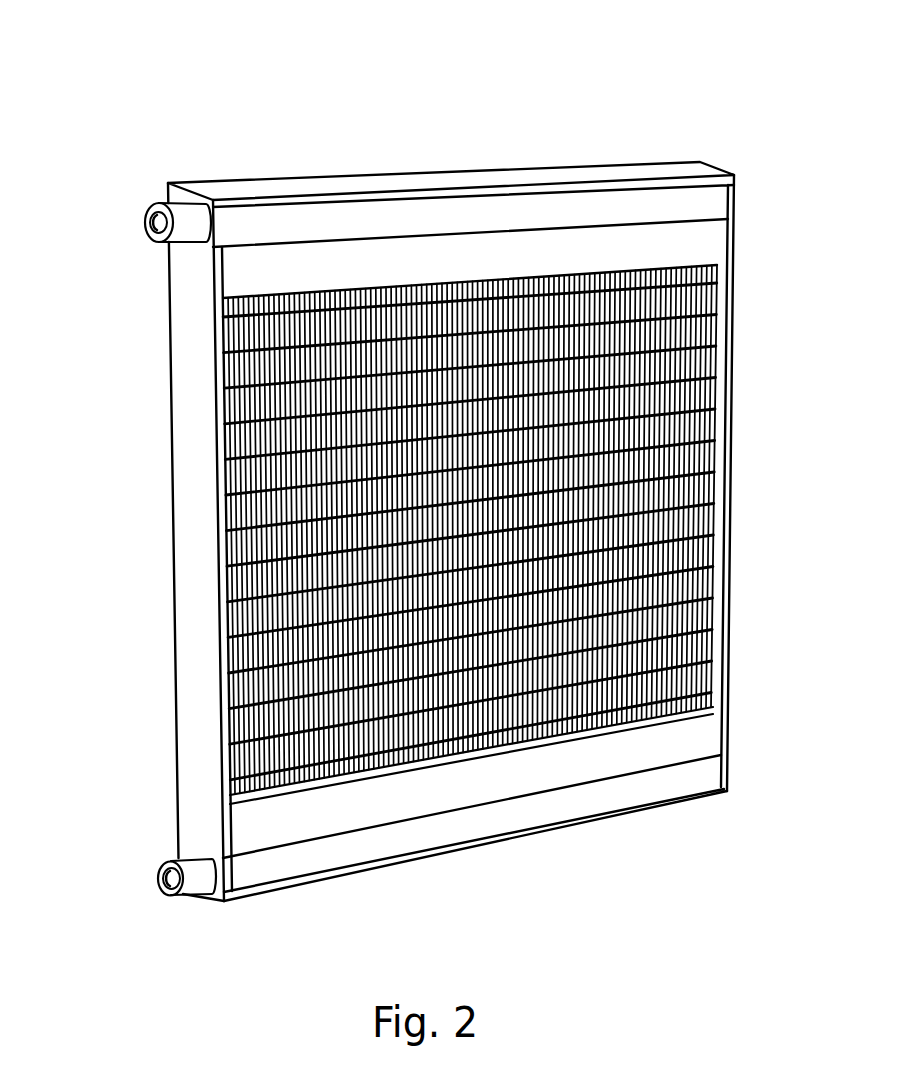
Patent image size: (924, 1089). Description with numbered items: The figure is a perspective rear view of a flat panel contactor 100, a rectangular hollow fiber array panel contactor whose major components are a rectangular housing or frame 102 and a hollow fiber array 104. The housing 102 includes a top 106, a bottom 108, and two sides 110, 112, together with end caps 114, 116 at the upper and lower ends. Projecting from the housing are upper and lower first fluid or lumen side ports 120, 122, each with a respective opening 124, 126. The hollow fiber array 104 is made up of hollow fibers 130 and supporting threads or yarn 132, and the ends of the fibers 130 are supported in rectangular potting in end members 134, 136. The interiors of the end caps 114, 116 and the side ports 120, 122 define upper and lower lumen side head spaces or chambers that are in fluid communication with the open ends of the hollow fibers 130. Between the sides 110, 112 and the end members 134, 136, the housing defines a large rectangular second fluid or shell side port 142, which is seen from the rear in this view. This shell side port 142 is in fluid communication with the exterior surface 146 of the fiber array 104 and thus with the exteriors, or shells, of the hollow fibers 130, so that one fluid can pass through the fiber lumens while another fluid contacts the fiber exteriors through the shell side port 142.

The flat panel contactor 100 is at (450, 131).
The housing 102 is at (626, 170).
The hollow fiber array 104 is at (691, 369).
The top 106 is at (548, 177).
The bottom 108 is at (596, 822).
The side 110 is at (183, 383).
The side 112 is at (735, 305).
The end cap 114 is at (680, 205).
The end cap 116 is at (678, 777).
The upper side port 120 is at (183, 212).
The lower side port 122 is at (193, 880).
The opening 124 is at (155, 222).
The opening 126 is at (167, 880).
The hollow fibers 130 is at (698, 555).
The supporting threads or yarn 132 is at (695, 600).
The end member 134 is at (700, 247).
The end member 136 is at (697, 733).
The second shell side port 142 is at (720, 482).
The exterior surface 146 is at (695, 425).